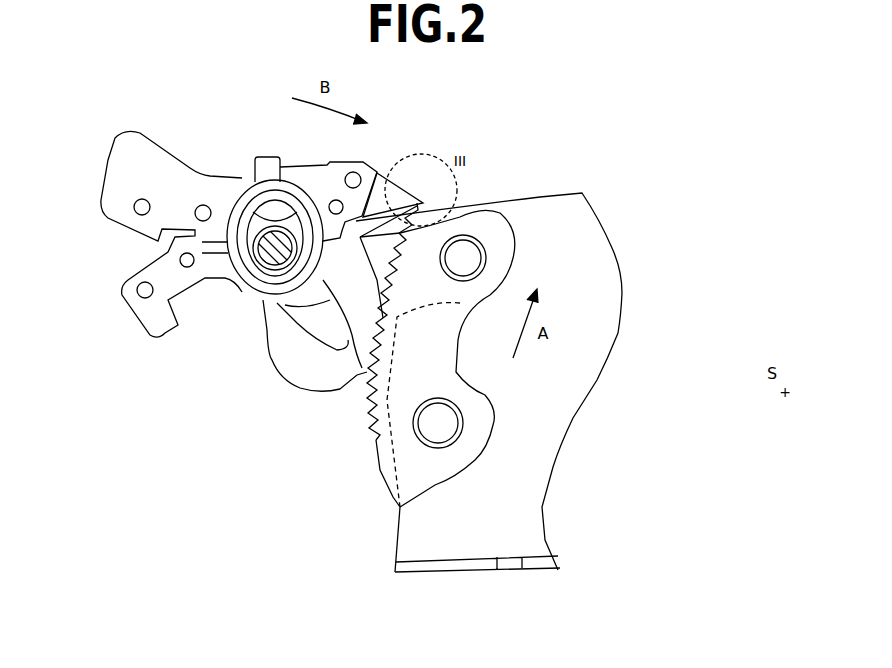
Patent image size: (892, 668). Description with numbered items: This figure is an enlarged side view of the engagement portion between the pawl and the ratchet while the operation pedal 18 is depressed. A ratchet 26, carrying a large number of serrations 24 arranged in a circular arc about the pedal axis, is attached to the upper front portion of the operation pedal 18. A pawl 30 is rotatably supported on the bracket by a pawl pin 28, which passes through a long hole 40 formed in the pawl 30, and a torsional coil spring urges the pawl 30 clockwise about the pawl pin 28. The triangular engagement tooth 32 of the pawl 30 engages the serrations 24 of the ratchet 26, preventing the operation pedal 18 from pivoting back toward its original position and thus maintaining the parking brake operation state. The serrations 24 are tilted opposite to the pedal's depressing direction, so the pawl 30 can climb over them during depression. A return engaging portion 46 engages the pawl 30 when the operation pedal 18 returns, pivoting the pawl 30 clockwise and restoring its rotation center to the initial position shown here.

The operation pedal 18 is at (523, 477).
The serrations 24 is at (470, 222).
The ratchet 26 is at (437, 380).
The pawl pin 28 is at (262, 262).
The pawl 30 is at (173, 364).
The engagement tooth 32 is at (410, 172).
The long hole 40 is at (250, 208).
The return engaging portion 46 is at (440, 257).